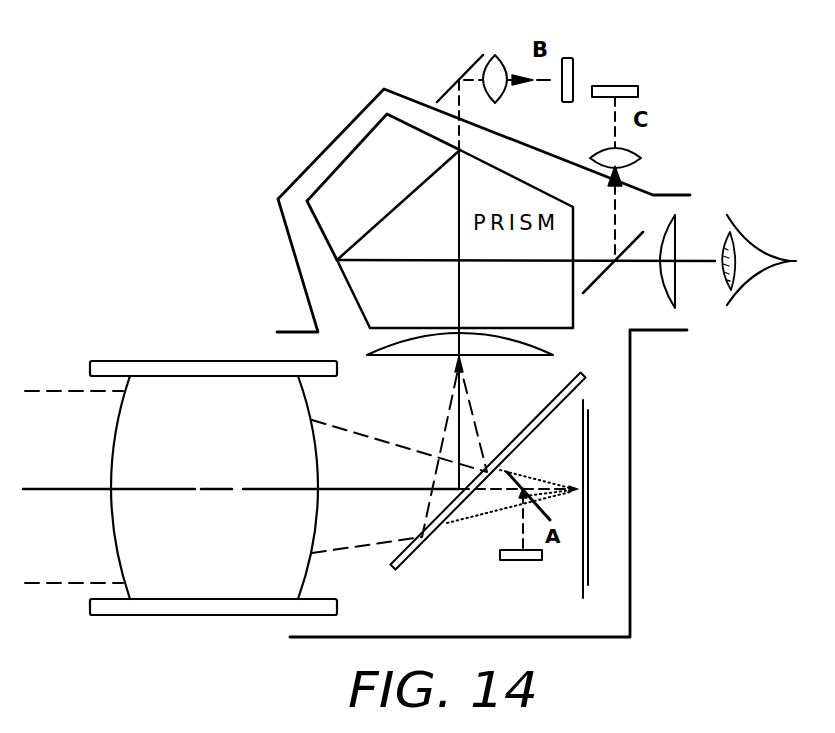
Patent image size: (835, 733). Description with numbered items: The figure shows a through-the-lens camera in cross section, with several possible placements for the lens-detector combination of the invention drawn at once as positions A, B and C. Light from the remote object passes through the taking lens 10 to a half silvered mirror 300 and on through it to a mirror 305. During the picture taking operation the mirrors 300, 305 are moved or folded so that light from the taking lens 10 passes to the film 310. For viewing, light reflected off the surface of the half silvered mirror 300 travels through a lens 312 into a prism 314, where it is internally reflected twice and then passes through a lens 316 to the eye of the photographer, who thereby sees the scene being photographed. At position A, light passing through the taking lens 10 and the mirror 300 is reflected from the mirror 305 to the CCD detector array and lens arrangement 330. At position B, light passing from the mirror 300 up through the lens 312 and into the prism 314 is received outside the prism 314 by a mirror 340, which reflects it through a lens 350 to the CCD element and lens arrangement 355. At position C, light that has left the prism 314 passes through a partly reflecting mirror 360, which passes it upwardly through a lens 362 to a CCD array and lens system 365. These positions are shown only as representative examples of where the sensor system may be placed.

The taking lens 10 is at (180, 592).
The half silvered mirror 300 is at (519, 437).
The mirror 305 is at (543, 468).
The film 310 is at (588, 467).
The lens 312 is at (533, 348).
The prism 314 is at (342, 173).
The lens 316 is at (673, 238).
The CCD detector array and lens arrangement 330 is at (530, 562).
The mirror 340 is at (450, 90).
The lens 350 is at (500, 57).
The CCD element and lens arrangement 355 is at (572, 104).
The partly reflecting mirror 360 is at (595, 280).
The lens 362 is at (632, 160).
The CCD array and lens system 365 is at (622, 86).